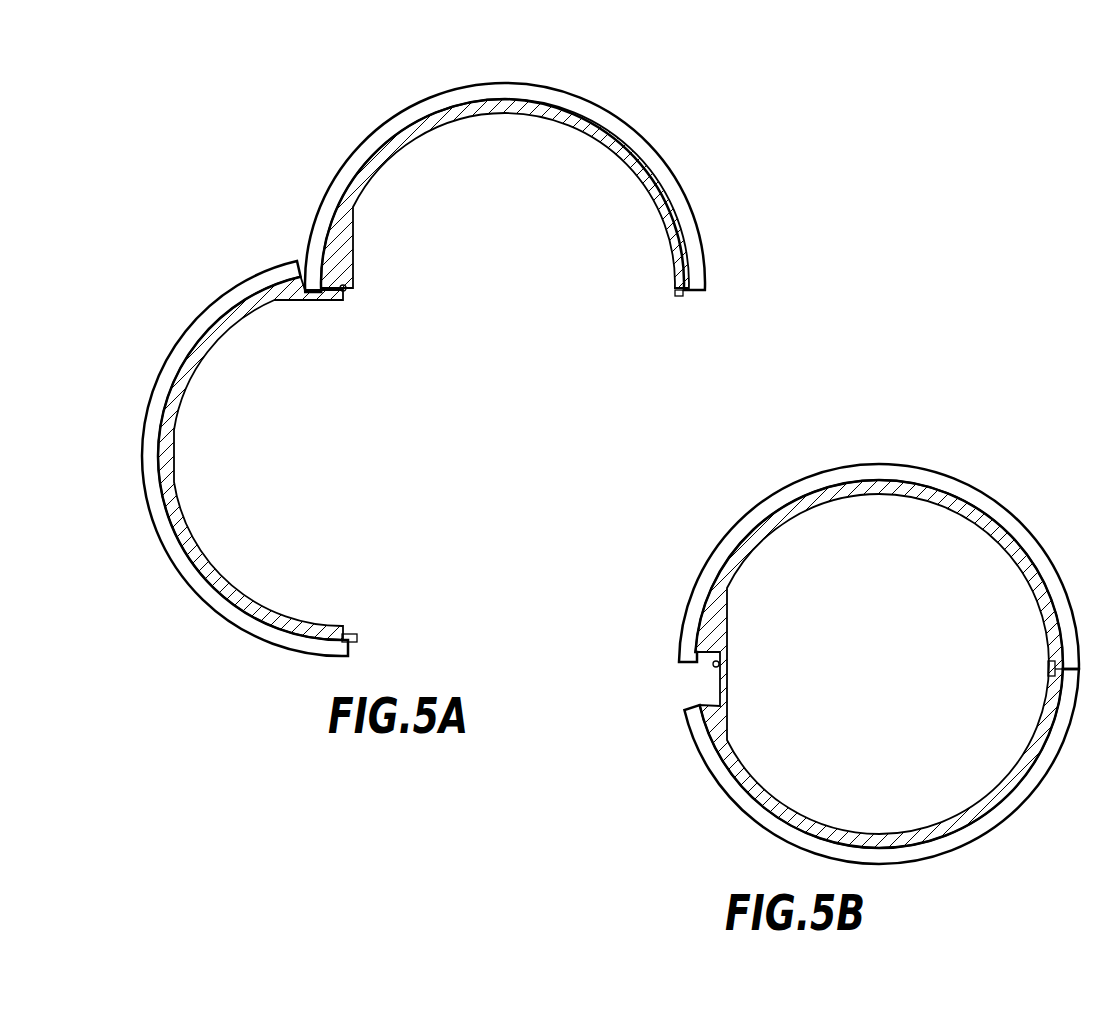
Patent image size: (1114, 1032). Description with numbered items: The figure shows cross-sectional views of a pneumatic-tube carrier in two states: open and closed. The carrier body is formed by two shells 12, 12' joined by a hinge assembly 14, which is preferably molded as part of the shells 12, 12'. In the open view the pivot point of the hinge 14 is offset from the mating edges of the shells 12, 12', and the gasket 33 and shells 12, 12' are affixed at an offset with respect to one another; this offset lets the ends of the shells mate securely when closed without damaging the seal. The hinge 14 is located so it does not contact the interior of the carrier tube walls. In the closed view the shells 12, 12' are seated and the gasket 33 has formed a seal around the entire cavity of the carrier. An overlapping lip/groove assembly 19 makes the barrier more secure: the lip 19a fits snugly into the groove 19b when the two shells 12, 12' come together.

In FIG. 5A, the shell 12 is at (510, 187).
In FIG. 5B, the shell 12 is at (879, 532).
In FIG. 5A, the shell 12' is at (245, 435).
In FIG. 5B, the shell 12' is at (881, 783).
In FIG. 5A, the gasket 33 is at (505, 113).
In FIG. 5B, the gasket 33 is at (745, 562).
In FIG. 5A, the hinge assembly 14 is at (347, 292).
In FIG. 5B, the hinge assembly 14 is at (714, 668).
In FIG. 5B, the overlapping lip/groove assembly 19 is at (1053, 663).
In FIG. 5A, the lip 19a is at (357, 637).
In FIG. 5A, the groove 19b is at (680, 298).